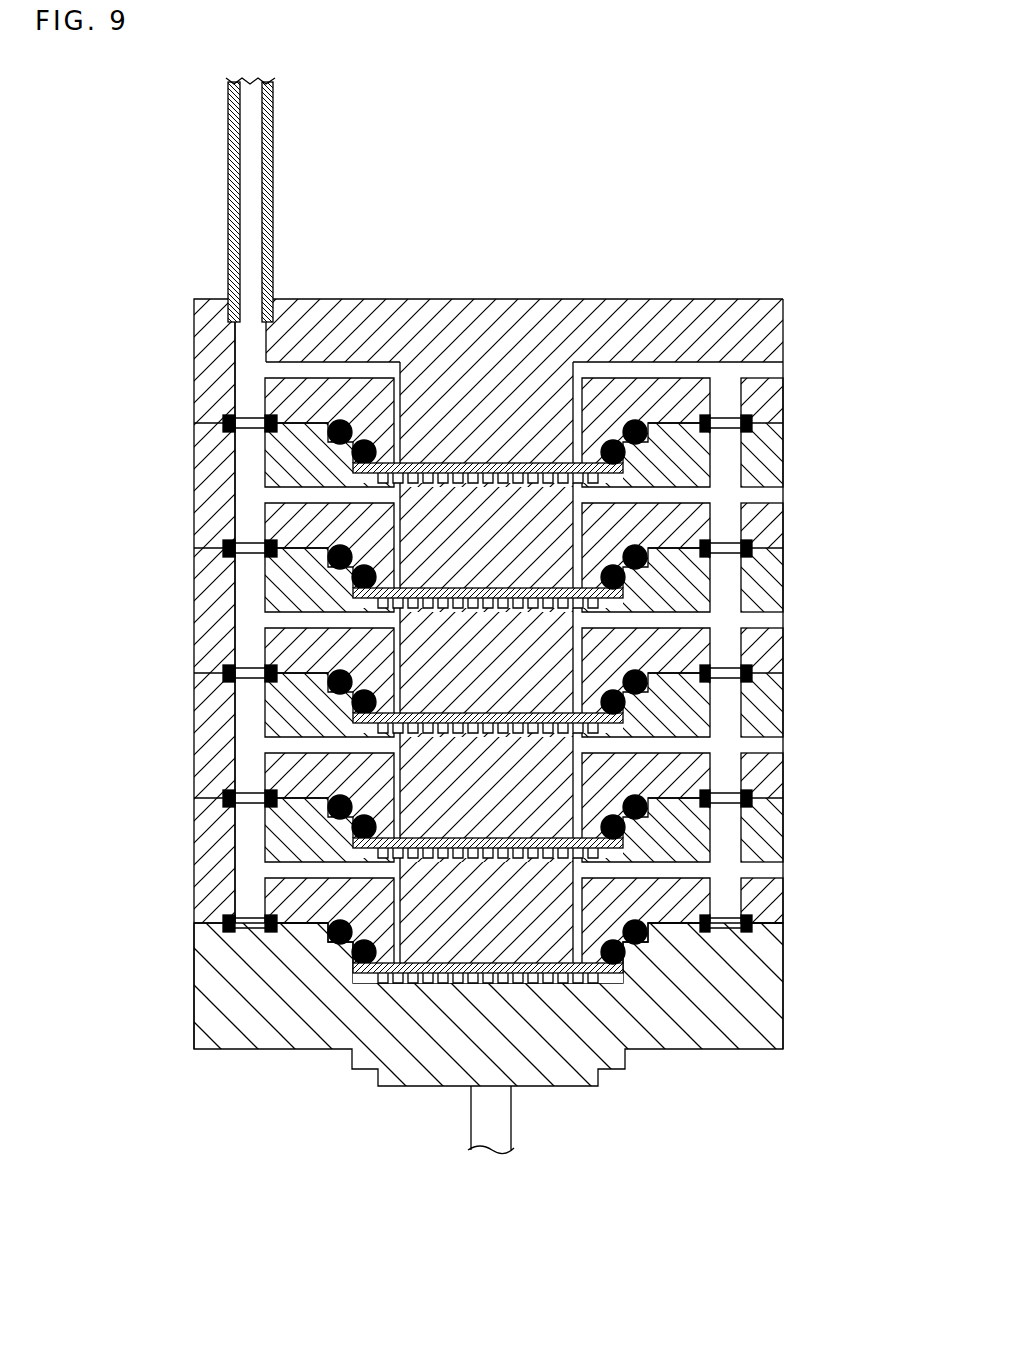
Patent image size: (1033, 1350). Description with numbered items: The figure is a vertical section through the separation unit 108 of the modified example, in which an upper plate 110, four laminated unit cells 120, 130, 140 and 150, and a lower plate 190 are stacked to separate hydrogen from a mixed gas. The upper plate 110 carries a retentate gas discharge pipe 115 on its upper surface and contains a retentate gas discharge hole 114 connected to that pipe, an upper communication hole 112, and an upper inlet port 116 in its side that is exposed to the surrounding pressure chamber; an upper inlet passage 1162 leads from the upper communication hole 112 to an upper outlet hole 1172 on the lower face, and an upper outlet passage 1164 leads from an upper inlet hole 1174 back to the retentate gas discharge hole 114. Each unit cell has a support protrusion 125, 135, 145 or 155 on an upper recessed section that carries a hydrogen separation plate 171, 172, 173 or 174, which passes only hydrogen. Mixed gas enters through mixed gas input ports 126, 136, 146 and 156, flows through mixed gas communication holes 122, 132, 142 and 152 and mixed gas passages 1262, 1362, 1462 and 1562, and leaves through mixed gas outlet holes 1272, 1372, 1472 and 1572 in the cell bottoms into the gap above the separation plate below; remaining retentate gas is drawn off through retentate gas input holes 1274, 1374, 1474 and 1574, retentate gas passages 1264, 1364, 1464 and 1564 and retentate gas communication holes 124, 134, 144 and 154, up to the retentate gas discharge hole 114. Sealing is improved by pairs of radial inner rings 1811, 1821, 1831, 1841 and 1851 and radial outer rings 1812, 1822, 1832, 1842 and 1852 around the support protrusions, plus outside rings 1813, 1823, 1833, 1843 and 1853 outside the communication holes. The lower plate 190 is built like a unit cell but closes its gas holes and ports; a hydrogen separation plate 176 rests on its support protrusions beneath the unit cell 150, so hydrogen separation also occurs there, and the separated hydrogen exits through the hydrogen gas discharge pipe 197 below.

The separation unit 108 is at (690, 192).
The upper plate 110 is at (152, 356).
The upper communication hole 112 is at (732, 397).
The retentate gas discharge hole 114 is at (245, 380).
The retentate gas discharge pipe 115 is at (273, 150).
The upper inlet port 116 is at (778, 368).
The upper inlet passage 1162 is at (702, 370).
The upper outlet passage 1164 is at (356, 372).
The upper outlet hole 1172 is at (570, 438).
The upper inlet hole 1174 is at (398, 447).
The hydrogen separation plate 171 is at (484, 460).
The radial inner ring 1811 is at (602, 446).
The radial outer ring 1812 is at (637, 430).
The outside ring 1813 is at (752, 421).
The unit cell 120 is at (152, 477).
The mixed gas communication hole 122 is at (732, 519).
The retentate gas communication hole 124 is at (245, 505).
The support protrusion 125 is at (530, 487).
The mixed gas input port 126 is at (778, 494).
The mixed gas passage 1262 is at (702, 494).
The retentate gas passage 1264 is at (308, 500).
The mixed gas outlet hole 1272 is at (570, 562).
The retentate gas input hole 1274 is at (398, 572).
The hydrogen separation plate 172 is at (484, 583).
The radial inner ring 1821 is at (605, 569).
The radial outer ring 1822 is at (642, 548).
The outside ring 1823 is at (752, 546).
The unit cell 130 is at (152, 599).
The mixed gas communication hole 132 is at (732, 644).
The retentate gas communication hole 134 is at (245, 630).
The support protrusion 135 is at (530, 612).
The mixed gas input port 136 is at (778, 619).
The mixed gas passage 1362 is at (702, 619).
The retentate gas passage 1364 is at (308, 624).
The mixed gas outlet hole 1372 is at (570, 687).
The retentate gas input hole 1374 is at (398, 697).
The hydrogen separation plate 173 is at (484, 708).
The radial inner ring 1831 is at (605, 694).
The radial outer ring 1832 is at (642, 673).
The outside ring 1833 is at (752, 671).
The unit cell 140 is at (152, 727).
The mixed gas communication hole 142 is at (732, 769).
The retentate gas communication hole 144 is at (245, 772).
The support protrusion 145 is at (530, 737).
The mixed gas input port 146 is at (778, 744).
The mixed gas passage 1462 is at (702, 744).
The retentate gas passage 1464 is at (308, 749).
The mixed gas outlet hole 1472 is at (570, 812).
The retentate gas input hole 1474 is at (398, 822).
The hydrogen separation plate 174 is at (484, 833).
The radial inner ring 1841 is at (605, 819).
The radial outer ring 1842 is at (642, 798).
The outside ring 1843 is at (752, 796).
The unit cell 150 is at (152, 852).
The mixed gas communication hole 152 is at (732, 897).
The retentate gas communication hole 154 is at (245, 890).
The support protrusion 155 is at (530, 862).
The mixed gas input port 156 is at (778, 869).
The mixed gas passage 1562 is at (702, 869).
The retentate gas passage 1564 is at (308, 874).
The mixed gas outlet hole 1572 is at (570, 937).
The retentate gas input hole 1574 is at (398, 947).
The hydrogen separation plate 176 is at (484, 958).
The radial inner ring 1851 is at (605, 944).
The radial outer ring 1852 is at (642, 923).
The outside ring 1853 is at (752, 922).
The lower plate 190 is at (152, 984).
The hydrogen gas discharge pipe 197 is at (511, 1138).